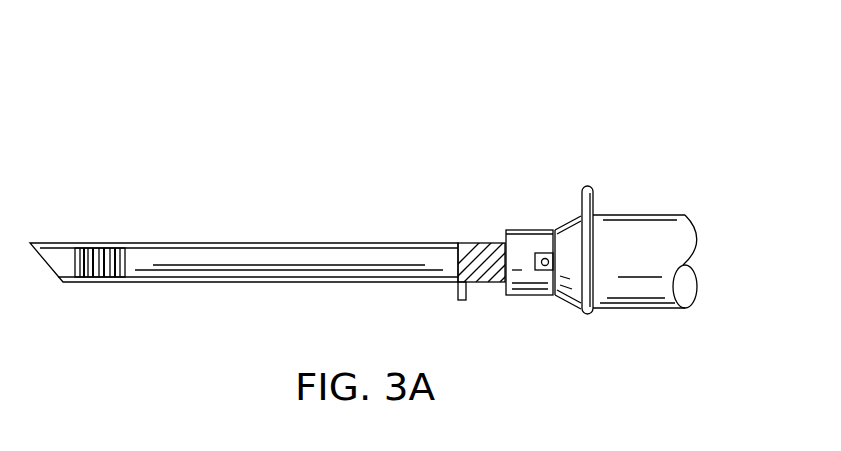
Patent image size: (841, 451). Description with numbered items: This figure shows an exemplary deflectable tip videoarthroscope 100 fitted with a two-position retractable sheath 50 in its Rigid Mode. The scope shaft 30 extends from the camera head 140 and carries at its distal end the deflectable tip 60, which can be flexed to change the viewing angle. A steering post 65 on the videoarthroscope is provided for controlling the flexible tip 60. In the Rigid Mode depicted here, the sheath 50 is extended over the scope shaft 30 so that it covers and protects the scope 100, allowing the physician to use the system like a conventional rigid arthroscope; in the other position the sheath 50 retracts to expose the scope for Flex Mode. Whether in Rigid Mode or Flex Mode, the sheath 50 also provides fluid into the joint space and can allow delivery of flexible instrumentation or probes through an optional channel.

The deflectable tip videoarthroscope 100 is at (433, 96).
The scope shaft 30 is at (193, 265).
The deflectable tip 60 is at (97, 260).
The two-position retractable sheath 50 is at (407, 243).
The steering post 65 is at (587, 205).
The camera head 140 is at (633, 298).